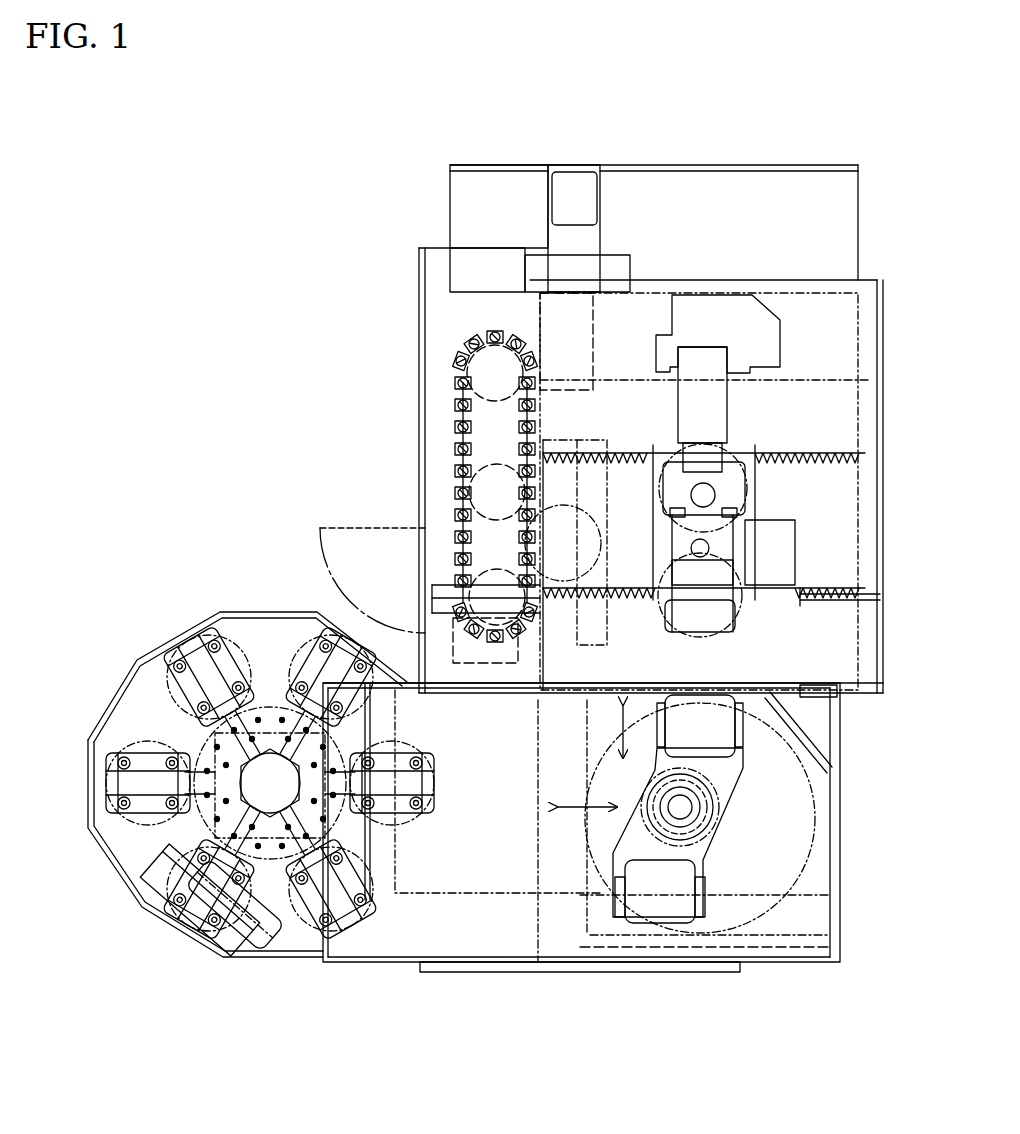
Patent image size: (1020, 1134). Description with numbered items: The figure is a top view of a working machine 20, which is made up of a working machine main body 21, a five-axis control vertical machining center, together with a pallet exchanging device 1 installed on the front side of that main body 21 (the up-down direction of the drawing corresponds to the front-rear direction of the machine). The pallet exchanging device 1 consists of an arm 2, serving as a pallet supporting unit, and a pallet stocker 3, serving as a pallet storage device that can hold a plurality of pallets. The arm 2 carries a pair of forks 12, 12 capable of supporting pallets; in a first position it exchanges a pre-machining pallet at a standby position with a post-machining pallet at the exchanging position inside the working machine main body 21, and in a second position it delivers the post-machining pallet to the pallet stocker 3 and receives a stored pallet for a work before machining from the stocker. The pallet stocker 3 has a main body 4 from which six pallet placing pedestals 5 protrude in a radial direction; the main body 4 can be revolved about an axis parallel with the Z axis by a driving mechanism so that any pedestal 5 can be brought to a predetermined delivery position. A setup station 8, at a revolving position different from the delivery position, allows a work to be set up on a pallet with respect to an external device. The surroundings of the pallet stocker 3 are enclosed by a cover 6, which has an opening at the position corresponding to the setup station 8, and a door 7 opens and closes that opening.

The pallet exchanging device 1 is at (475, 1033).
The arm 2 is at (573, 905).
The pallet stocker 3 is at (355, 932).
The main body 4 is at (268, 783).
The pallet placing pedestal 5 is at (195, 690).
The cover 6 is at (232, 611).
The door 7 is at (157, 920).
The setup station 8 is at (278, 925).
The fork 12 is at (737, 750).
The working machine 20 is at (337, 222).
The working machine main body 21 is at (762, 262).